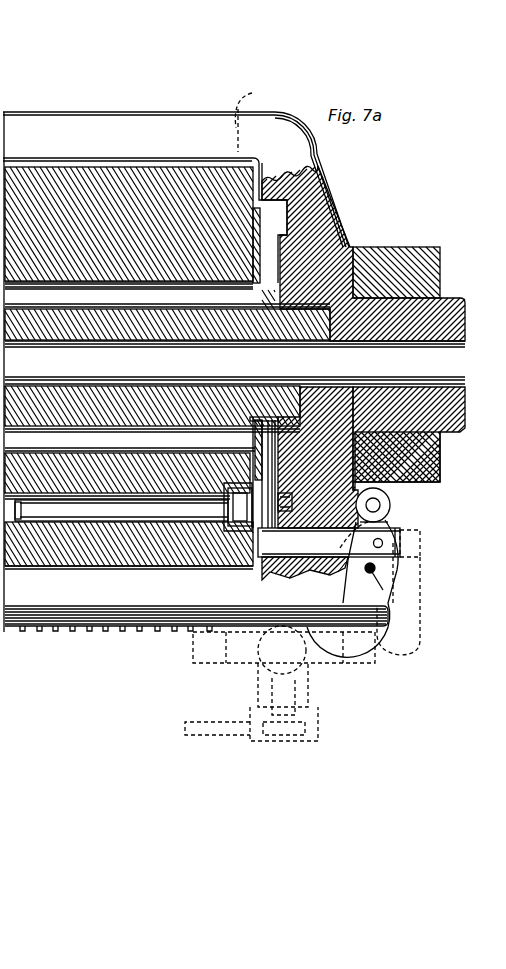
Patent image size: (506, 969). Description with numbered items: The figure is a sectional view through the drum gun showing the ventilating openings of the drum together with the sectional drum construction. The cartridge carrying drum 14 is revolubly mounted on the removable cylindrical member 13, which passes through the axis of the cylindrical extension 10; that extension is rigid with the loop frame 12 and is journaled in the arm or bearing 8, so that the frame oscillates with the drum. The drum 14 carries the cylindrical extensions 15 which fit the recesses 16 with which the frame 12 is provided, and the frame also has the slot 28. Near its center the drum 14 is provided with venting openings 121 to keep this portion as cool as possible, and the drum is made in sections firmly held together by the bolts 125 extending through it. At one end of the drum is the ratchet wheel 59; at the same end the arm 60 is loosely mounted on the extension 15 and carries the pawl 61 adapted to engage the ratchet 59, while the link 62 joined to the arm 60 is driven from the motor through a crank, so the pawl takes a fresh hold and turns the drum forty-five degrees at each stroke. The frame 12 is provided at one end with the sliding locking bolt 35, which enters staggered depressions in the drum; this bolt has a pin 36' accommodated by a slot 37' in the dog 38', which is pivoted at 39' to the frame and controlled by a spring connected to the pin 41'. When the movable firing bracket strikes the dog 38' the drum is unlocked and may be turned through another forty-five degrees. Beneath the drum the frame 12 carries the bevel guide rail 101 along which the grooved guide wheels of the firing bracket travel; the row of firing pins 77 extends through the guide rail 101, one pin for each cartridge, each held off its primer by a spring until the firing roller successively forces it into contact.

The frame 12 is at (158, 111).
The slot 28 is at (251, 114).
The cartridge carrying drum 14 is at (130, 185).
The ratchet wheel 59 is at (258, 252).
The cylindrical extensions 15 is at (346, 247).
The arm or bearing 8 is at (430, 275).
The venting openings 121 is at (167, 424).
The removable cylindrical member 13 is at (86, 358).
The cylindrical extension 10 is at (465, 409).
The recesses 16 is at (318, 410).
The arm 60 is at (297, 398).
The link 62 is at (292, 500).
The pawl 61 is at (246, 522).
The bolts 125 is at (121, 510).
The sliding locking bolt 35 is at (285, 545).
The pivot 39' is at (403, 505).
The dog 38' is at (390, 583).
The pin 36' is at (428, 540).
The slot 37' is at (417, 572).
The pin 41' is at (424, 592).
The bevel guide rail 101 is at (147, 622).
The firing pins 77 is at (55, 631).